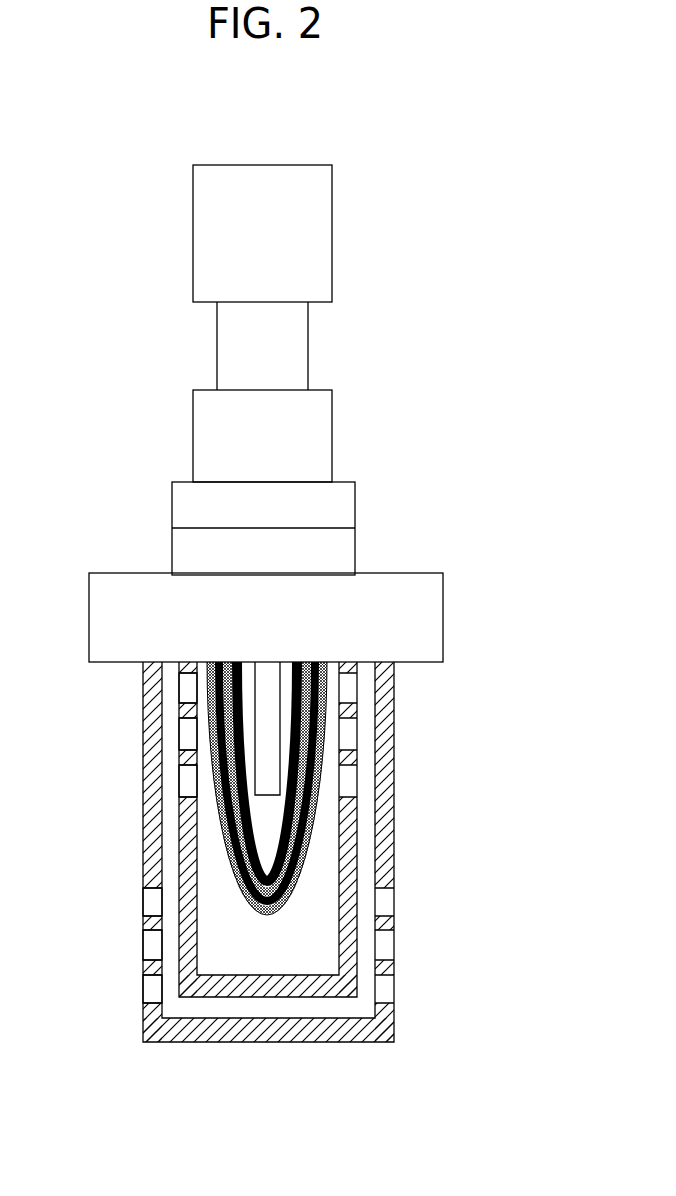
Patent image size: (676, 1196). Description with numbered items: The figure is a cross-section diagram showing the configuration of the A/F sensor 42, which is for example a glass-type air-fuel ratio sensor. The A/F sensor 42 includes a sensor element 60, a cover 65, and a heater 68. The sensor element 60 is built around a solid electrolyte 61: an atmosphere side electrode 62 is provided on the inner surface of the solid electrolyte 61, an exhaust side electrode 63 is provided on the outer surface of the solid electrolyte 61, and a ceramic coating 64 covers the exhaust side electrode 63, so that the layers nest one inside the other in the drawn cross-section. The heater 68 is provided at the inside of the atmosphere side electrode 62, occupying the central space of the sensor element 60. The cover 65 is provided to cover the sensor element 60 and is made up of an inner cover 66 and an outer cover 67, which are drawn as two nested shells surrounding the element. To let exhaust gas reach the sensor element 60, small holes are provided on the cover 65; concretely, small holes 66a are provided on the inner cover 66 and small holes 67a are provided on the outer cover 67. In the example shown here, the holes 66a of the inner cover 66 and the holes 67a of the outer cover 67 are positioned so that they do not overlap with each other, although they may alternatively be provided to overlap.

The A/F sensor 42 is at (193, 165).
The sensor element 60 is at (395, 751).
The solid electrolyte 61 is at (310, 662).
The atmosphere side electrode 62 is at (300, 662).
The exhaust side electrode 63 is at (320, 662).
The ceramic coating 64 is at (323, 767).
The cover 65 is at (215, 913).
The inner cover 66 is at (330, 997).
The small holes 66a is at (178, 778).
The outer cover 67 is at (268, 1042).
The small holes 67a is at (143, 982).
The heater 68 is at (258, 760).